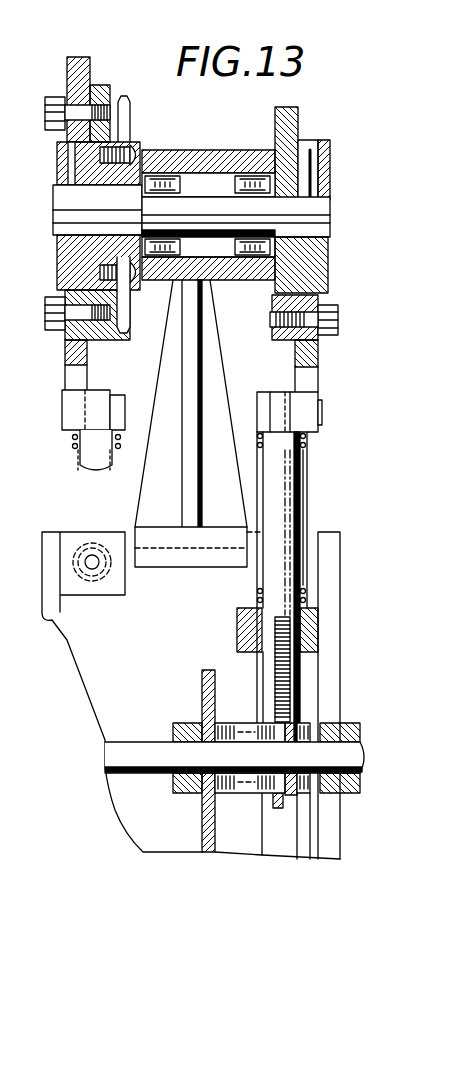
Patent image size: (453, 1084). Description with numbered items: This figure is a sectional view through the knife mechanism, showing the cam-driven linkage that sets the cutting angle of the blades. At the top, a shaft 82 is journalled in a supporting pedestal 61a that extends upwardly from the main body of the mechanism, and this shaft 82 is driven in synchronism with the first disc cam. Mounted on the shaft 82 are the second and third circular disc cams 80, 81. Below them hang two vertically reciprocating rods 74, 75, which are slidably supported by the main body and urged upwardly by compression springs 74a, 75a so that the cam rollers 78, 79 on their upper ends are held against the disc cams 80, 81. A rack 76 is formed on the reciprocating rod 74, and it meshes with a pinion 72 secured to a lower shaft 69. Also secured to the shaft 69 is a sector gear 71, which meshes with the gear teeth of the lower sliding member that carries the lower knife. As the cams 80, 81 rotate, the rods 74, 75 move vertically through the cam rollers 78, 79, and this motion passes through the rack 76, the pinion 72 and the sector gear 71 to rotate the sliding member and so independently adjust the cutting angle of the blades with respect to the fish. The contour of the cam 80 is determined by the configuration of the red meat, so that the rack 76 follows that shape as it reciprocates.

The supporting pedestal 61a is at (190, 312).
The shaft 69 is at (345, 756).
The sector gear 71 is at (207, 668).
The pinion 72 is at (298, 707).
The vertically reciprocating rod 74 is at (275, 465).
The compression spring 74a is at (307, 437).
The vertically reciprocating rod 75 is at (90, 455).
The compression spring 75a is at (72, 437).
The rack 76 is at (298, 675).
The cam roller 78 is at (307, 402).
The cam roller 79 is at (67, 411).
The second circular disc cam 80 is at (303, 375).
The third circular disc cam 81 is at (73, 368).
The shaft 82 is at (327, 143).